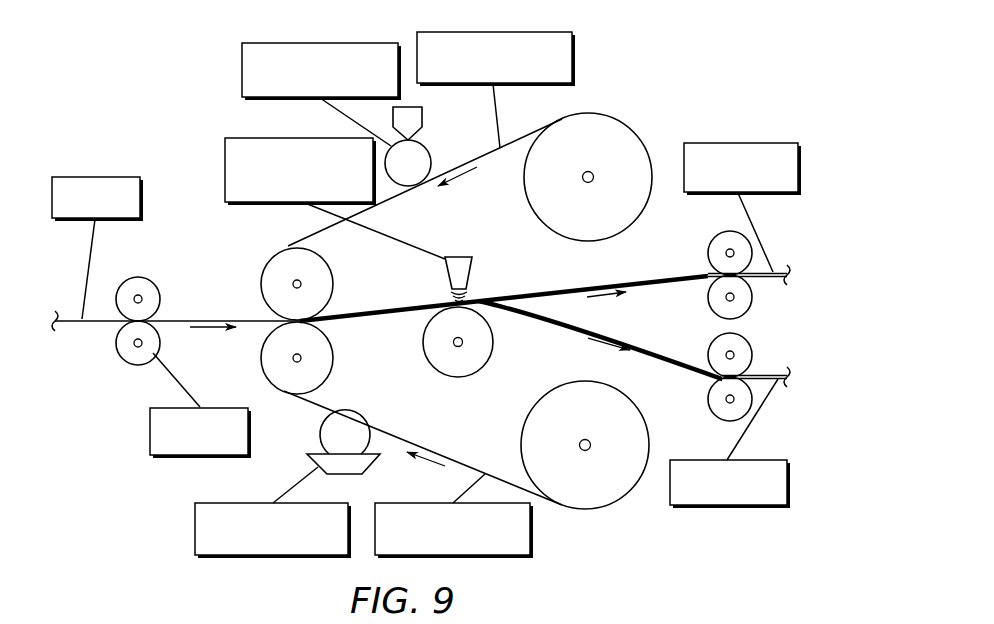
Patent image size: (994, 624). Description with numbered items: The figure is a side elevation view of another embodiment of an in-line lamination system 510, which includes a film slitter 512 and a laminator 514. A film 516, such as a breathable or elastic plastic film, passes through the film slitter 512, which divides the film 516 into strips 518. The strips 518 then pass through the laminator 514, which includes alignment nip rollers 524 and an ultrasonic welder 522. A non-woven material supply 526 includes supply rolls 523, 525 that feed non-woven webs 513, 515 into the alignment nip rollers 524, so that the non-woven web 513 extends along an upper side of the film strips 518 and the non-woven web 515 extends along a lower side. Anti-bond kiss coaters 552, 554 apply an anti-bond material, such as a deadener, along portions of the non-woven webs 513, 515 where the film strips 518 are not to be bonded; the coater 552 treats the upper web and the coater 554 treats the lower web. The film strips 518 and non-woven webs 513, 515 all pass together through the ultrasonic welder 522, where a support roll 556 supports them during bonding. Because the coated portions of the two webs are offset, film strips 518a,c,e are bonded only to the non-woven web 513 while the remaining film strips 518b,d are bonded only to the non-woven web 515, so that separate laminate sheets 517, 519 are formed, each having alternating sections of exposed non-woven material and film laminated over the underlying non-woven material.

The in-line lamination system 510 is at (114, 62).
The film slitter 512 is at (200, 407).
The non-woven web 513 is at (513, 32).
The laminator 514 is at (202, 180).
The non-woven web 515 is at (530, 535).
The film 516 is at (107, 177).
The laminate sheet 517 is at (757, 143).
The strips 518 is at (197, 317).
The film strips 518a,c,e is at (655, 288).
The film strips 518b,d is at (566, 326).
The laminate sheet 519 is at (772, 460).
The ultrasonic welder 522 is at (285, 138).
The supply roll 523 is at (646, 131).
The alignment nip rollers 524 is at (275, 265).
The supply roll 525 is at (628, 507).
The non-woven material supply 526 is at (648, 95).
The anti-bond kiss coater 552 is at (300, 43).
The anti-bond kiss coater 554 is at (250, 503).
The support roll 556 is at (492, 314).